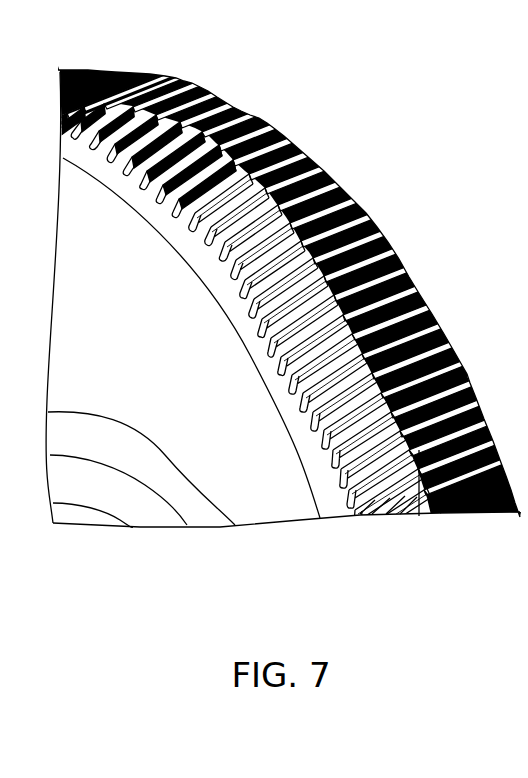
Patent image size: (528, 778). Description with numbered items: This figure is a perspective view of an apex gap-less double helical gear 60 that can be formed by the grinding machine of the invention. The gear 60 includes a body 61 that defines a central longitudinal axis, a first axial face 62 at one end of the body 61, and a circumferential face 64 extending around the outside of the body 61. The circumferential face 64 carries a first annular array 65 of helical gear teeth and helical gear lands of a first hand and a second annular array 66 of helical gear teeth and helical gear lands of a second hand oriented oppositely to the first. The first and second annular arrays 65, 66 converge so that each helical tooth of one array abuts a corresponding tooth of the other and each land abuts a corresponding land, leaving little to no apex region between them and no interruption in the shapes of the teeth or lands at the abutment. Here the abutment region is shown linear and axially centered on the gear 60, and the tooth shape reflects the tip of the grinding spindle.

The gear 60 is at (264, 305).
The body 61 is at (277, 514).
The first axial face 62 is at (140, 359).
The circumferential face 64 is at (440, 494).
The first annular array 65 is at (348, 563).
The second annular array 66 is at (438, 563).